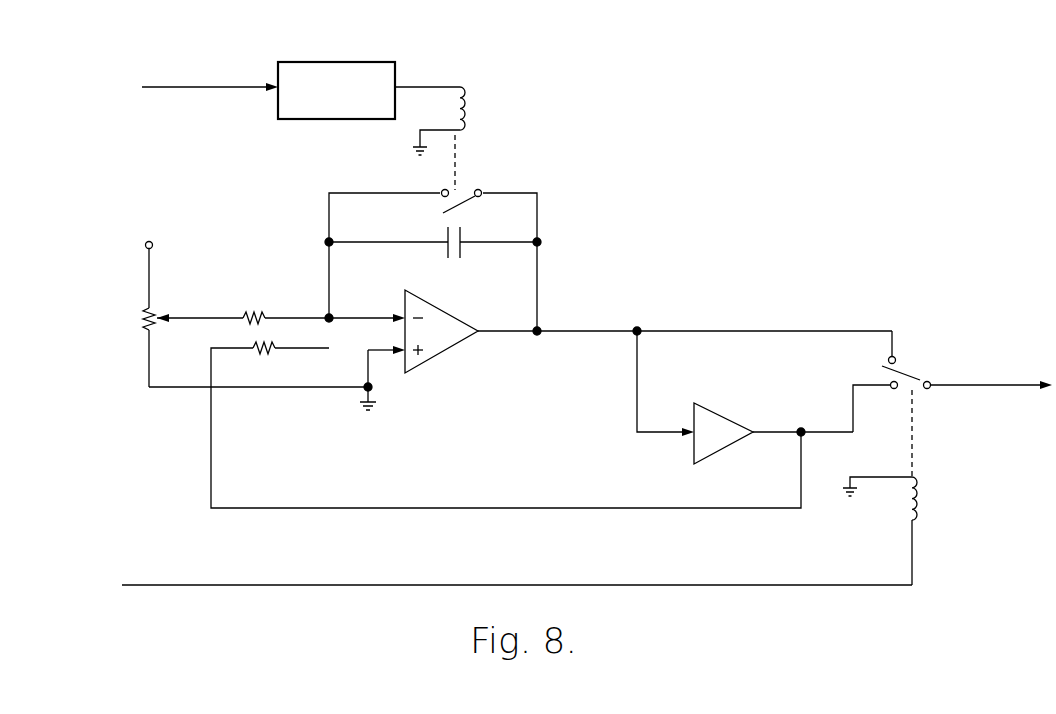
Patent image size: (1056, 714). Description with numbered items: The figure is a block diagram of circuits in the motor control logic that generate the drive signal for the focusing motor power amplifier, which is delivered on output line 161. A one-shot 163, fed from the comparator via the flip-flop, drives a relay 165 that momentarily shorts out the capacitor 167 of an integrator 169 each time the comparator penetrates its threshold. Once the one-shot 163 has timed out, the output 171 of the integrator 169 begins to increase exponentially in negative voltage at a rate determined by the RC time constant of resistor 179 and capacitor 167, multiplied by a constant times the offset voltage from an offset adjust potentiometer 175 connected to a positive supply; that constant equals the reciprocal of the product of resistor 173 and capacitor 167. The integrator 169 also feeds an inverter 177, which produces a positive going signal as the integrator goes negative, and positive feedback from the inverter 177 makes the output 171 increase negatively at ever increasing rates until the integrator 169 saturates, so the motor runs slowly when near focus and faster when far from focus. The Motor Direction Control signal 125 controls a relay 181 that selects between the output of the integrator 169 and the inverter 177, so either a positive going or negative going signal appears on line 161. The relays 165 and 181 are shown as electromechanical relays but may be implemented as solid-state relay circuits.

The Motor Direction Control signal 125 is at (195, 81).
The output line 161 is at (998, 384).
The one-shot 163 is at (396, 62).
The relay 165 is at (465, 98).
The capacitor 167 is at (461, 260).
The integrator 169 is at (449, 350).
The integrator output 171 is at (578, 328).
The resistor 173 is at (247, 310).
The offset adjust potentiometer 175 is at (147, 318).
The inverter 177 is at (694, 402).
The resistor 179 is at (262, 352).
The relay 181 is at (917, 502).